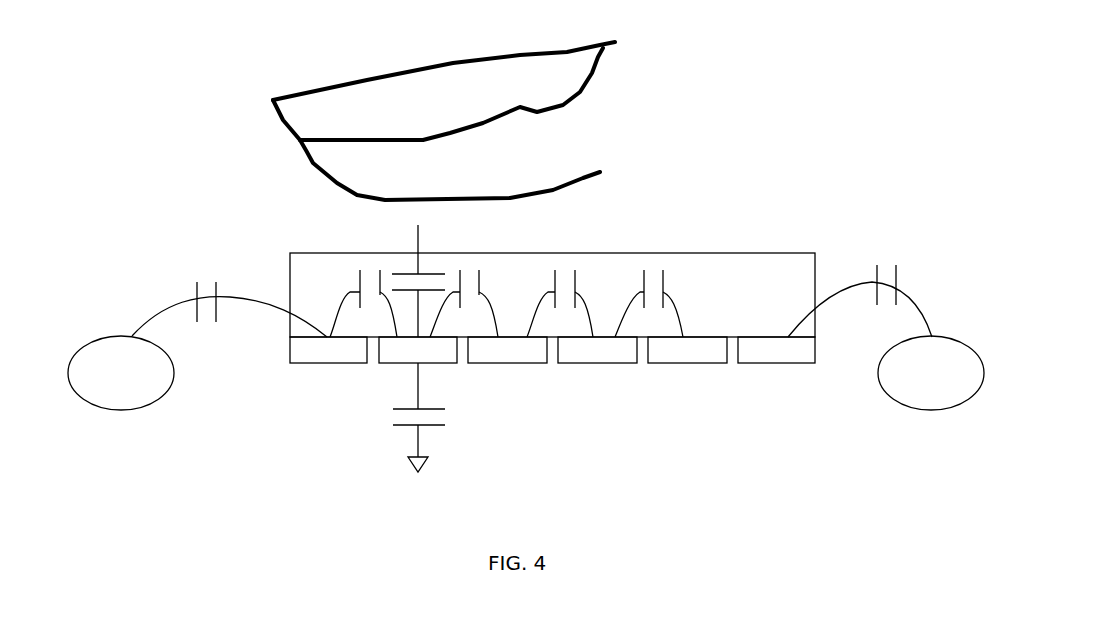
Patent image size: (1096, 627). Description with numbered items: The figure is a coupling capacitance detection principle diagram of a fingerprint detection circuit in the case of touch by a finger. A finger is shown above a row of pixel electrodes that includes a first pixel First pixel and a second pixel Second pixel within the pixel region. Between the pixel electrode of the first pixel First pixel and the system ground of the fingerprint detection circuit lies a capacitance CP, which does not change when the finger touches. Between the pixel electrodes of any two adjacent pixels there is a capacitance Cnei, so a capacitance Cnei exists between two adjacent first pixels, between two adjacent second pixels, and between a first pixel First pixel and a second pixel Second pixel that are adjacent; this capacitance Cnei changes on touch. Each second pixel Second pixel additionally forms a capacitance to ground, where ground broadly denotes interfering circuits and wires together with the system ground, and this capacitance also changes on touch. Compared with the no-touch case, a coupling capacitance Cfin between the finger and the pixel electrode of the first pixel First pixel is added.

The coupling capacitance Cfin is at (421, 281).
The capacitance between adjacent pixel electrodes Cnei is at (506, 303).
The capacitance between pixel electrode and system ground CP is at (421, 440).
The first pixel First pixel is at (687, 362).
The second pixel Second pixel is at (335, 362).